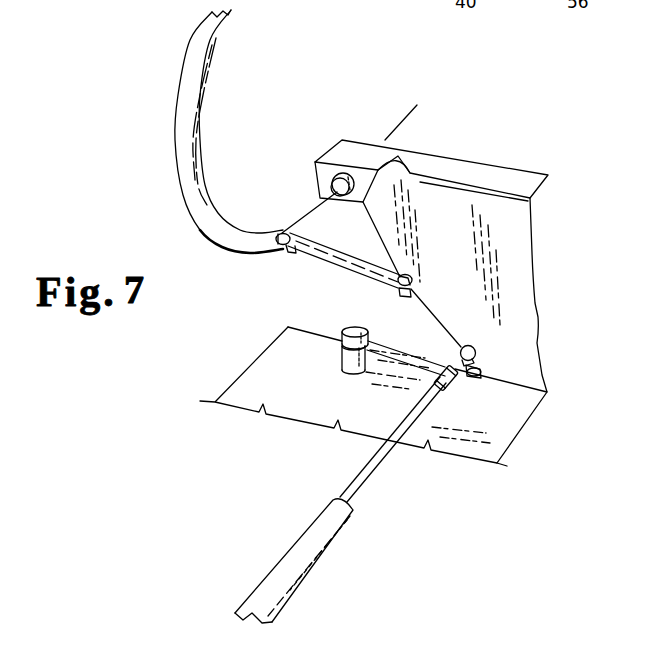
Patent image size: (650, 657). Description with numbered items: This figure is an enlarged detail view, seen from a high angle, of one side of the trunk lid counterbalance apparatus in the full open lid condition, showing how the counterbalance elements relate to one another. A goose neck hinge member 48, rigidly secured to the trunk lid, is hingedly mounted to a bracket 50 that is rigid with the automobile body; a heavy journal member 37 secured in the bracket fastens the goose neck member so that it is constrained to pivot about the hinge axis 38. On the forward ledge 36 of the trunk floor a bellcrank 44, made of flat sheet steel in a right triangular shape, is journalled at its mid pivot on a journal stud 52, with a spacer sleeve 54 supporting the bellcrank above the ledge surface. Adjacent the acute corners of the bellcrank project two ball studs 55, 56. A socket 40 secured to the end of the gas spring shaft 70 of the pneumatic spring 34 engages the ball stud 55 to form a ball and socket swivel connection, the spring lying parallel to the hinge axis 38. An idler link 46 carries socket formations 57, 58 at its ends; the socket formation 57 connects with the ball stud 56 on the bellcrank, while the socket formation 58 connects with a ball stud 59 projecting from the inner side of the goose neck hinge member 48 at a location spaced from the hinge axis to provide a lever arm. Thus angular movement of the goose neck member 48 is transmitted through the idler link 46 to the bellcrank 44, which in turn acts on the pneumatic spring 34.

The pneumatic spring 34 is at (288, 537).
The forward ledge 36 is at (250, 380).
The journal member 37 is at (338, 182).
The hinge axis 38 is at (320, 203).
The socket 40 is at (475, 350).
The bellcrank 44 is at (431, 325).
The idler link 46 is at (335, 267).
The goose neck hinge member 48 is at (195, 135).
The bracket 50 is at (510, 253).
The journal stud 52 is at (350, 328).
The spacer sleeve 54 is at (342, 363).
The ball stud 55 is at (478, 370).
The ball stud 56 is at (397, 289).
The socket formation 57 is at (414, 280).
The socket formation 58 is at (291, 252).
The ball stud 59 is at (275, 231).
The gas spring shaft 70 is at (388, 463).